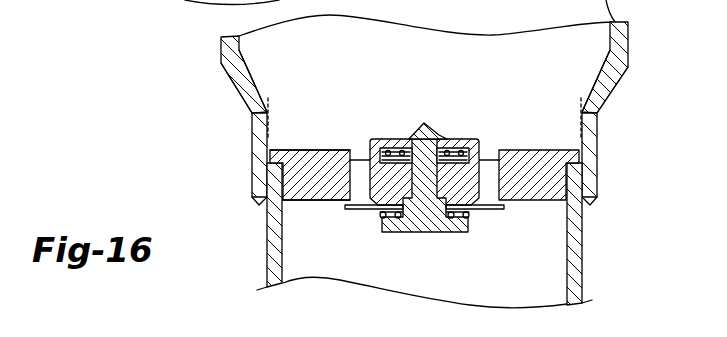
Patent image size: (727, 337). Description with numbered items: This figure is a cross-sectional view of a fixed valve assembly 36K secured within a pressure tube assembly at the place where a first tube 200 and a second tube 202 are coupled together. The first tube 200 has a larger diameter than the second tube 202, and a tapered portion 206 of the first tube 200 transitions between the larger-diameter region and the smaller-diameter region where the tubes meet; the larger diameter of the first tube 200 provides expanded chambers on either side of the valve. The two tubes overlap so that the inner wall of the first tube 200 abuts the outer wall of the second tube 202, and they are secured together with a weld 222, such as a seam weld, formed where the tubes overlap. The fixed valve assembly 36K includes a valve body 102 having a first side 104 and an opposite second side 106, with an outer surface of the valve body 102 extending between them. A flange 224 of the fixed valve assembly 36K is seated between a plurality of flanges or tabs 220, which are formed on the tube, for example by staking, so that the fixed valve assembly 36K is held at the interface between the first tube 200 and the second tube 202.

The first tube 200 is at (224, 48).
The tapered portion 206 is at (240, 97).
The flanges or tabs 220 is at (275, 139).
The flange 224 is at (268, 157).
The weld 222 is at (267, 199).
The second tube 202 is at (267, 256).
The valve body 102 is at (322, 168).
The first side 104 is at (334, 150).
The second side 106 is at (313, 201).
The fixed valve assembly 36K is at (441, 120).